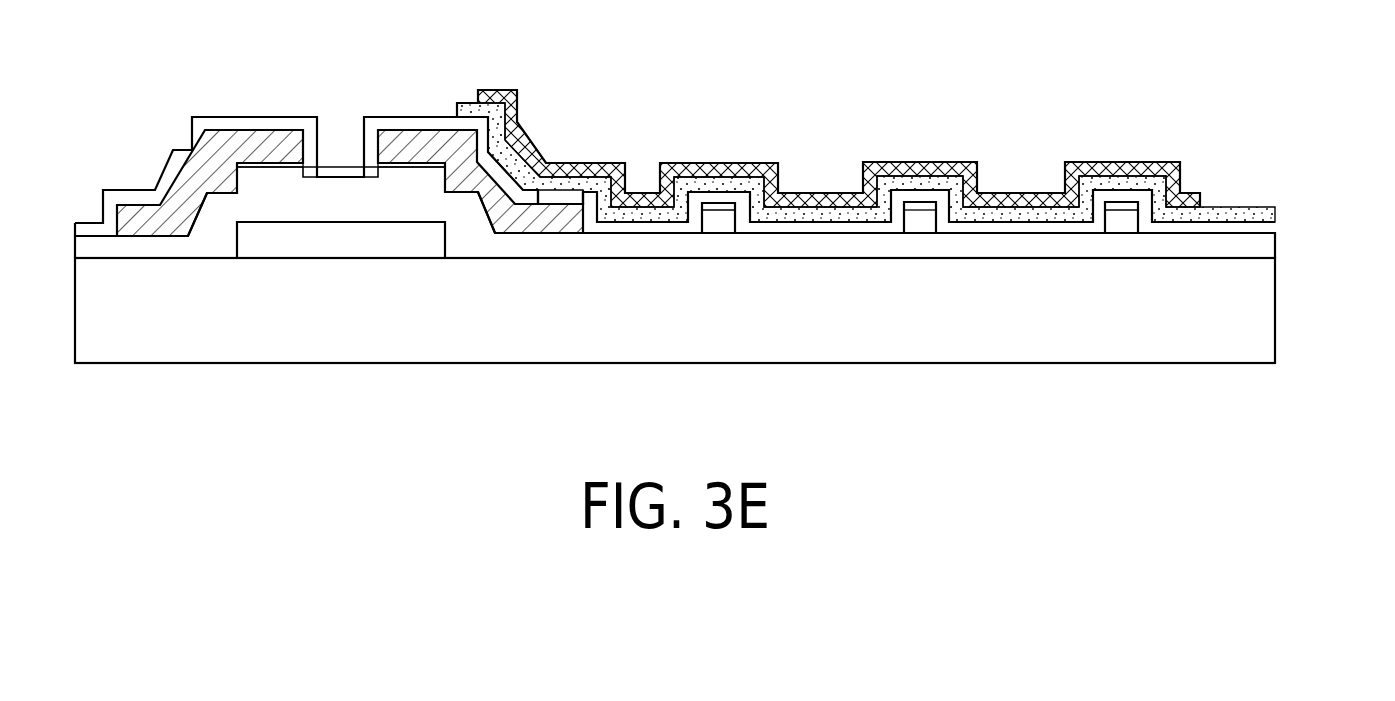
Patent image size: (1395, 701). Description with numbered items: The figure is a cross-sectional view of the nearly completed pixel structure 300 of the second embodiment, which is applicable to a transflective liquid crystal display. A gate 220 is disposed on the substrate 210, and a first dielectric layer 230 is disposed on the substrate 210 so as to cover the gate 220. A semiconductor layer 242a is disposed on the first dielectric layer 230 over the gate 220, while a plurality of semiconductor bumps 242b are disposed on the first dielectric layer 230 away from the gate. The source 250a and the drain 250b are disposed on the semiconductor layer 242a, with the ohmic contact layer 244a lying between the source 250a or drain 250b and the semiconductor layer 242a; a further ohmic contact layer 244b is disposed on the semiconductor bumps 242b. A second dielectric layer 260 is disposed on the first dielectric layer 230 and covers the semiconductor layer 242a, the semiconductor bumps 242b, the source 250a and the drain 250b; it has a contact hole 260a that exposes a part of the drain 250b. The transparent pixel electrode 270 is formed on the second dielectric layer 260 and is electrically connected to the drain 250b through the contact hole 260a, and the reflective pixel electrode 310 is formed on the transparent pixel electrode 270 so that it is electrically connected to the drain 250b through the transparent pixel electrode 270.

The substrate 210 is at (1267, 322).
The gate 220 is at (322, 250).
The first dielectric layer 230 is at (1267, 245).
The semiconductor layer 242a is at (389, 185).
The ohmic contact layer 244a is at (270, 163).
The source 250a is at (237, 137).
The drain 250b is at (410, 135).
The semiconductor bumps 242b is at (720, 225).
The ohmic contact layer 244b is at (926, 206).
The second dielectric layer 260 is at (1018, 226).
The contact hole 260a is at (554, 184).
The transparent pixel electrode 270 is at (1258, 213).
The reflective pixel electrode 310 is at (1200, 200).
The pixel structure 300 is at (1322, 462).